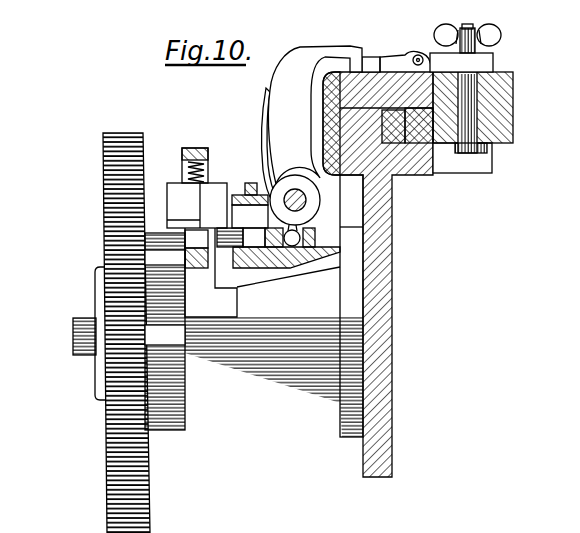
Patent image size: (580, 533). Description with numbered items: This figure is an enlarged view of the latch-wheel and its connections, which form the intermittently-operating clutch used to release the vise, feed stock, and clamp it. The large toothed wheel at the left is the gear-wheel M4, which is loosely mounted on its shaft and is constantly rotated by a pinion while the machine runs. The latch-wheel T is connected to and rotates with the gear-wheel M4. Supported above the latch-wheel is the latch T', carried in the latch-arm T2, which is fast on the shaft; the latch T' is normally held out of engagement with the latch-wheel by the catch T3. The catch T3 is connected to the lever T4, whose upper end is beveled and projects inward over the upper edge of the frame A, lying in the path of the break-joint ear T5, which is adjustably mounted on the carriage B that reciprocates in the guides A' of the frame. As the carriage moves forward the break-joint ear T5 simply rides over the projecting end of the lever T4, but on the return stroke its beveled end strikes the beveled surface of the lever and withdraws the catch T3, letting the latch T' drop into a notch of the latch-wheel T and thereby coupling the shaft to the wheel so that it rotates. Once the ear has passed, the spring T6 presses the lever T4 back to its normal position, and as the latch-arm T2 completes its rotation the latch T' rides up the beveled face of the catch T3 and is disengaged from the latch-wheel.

The latch-wheel gear M4 is at (105, 432).
The latch-wheel T is at (254, 306).
The latch T' is at (197, 205).
The latch-arm T2 is at (202, 148).
The catch T3 is at (255, 242).
The lever T4 is at (297, 76).
The break-joint ear T5 is at (488, 60).
The spring T6 is at (272, 112).
The frame A is at (407, 274).
The guides A' is at (386, 66).
The carriage B is at (500, 110).